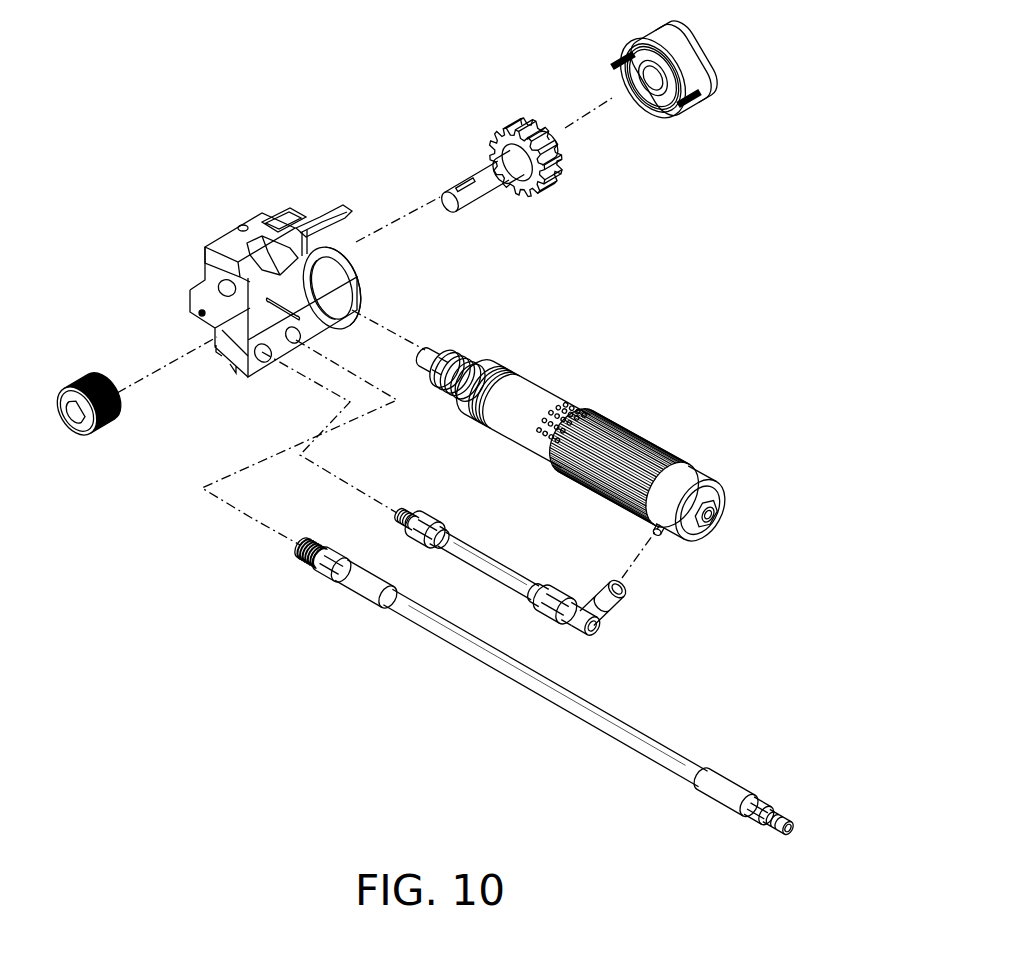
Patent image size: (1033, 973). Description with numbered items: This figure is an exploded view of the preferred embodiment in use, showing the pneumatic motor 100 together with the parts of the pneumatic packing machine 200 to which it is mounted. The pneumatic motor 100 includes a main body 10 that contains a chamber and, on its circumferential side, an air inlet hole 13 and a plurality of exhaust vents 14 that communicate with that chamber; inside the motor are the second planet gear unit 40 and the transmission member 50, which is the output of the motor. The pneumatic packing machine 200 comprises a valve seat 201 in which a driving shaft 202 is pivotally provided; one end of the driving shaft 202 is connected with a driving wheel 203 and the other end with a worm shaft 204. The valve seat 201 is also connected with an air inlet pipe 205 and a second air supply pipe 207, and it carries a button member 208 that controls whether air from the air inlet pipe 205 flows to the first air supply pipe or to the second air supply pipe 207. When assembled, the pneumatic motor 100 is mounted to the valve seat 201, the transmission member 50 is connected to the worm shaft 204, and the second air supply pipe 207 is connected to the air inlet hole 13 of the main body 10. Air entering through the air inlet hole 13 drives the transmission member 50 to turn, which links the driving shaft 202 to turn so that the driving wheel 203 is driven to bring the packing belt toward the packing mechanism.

The main body 10 is at (652, 422).
The air inlet hole 13 is at (663, 530).
The exhaust vent 14 is at (537, 435).
The second planet gear unit 40 is at (555, 372).
The transmission member 50 is at (472, 350).
The pneumatic motor 100 is at (712, 458).
The pneumatic packing machine 200 is at (203, 238).
The valve seat 201 is at (237, 225).
The driving shaft 202 is at (466, 182).
The driving wheel 203 is at (86, 383).
The worm shaft 204 is at (513, 118).
The air inlet pipe 205 is at (413, 605).
The second air supply pipe 207 is at (510, 570).
The button member 208 is at (320, 218).